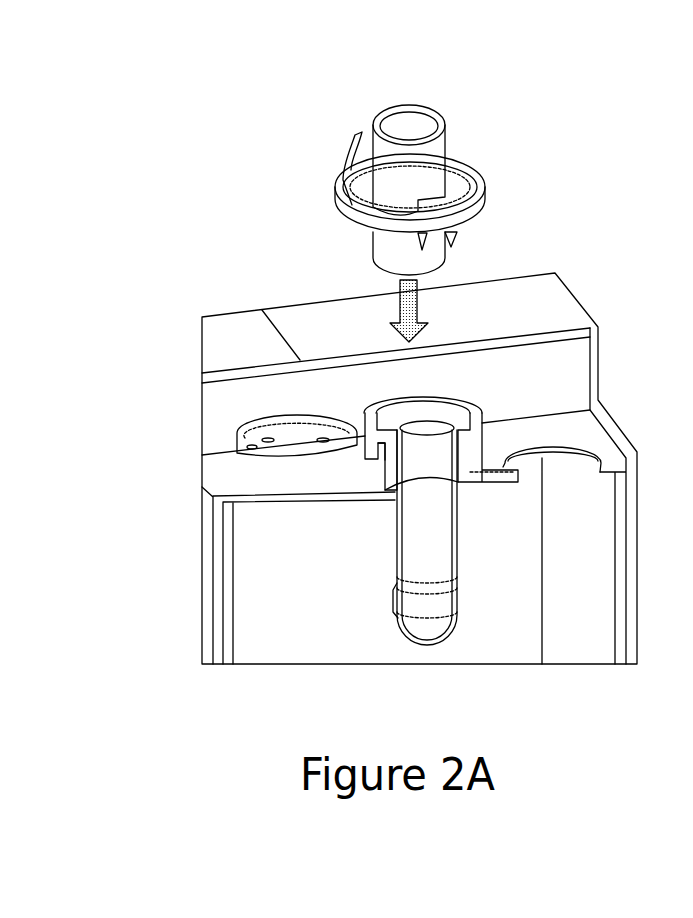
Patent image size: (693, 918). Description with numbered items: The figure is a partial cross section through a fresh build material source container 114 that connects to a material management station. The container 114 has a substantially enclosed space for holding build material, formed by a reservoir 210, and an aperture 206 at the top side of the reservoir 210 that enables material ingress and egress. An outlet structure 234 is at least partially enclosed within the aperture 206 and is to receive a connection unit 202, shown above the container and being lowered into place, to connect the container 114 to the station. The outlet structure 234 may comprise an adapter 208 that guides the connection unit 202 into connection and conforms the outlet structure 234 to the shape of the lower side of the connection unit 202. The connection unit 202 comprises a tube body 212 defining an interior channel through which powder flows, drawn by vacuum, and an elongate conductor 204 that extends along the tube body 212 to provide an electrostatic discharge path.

The fresh build material source container 114 is at (177, 373).
The connection unit 202 is at (455, 161).
The elongate conductor 204 is at (472, 140).
The aperture 206 is at (440, 442).
The adapter 208 is at (370, 408).
The reservoir 210 is at (245, 635).
The tube body 212 is at (382, 172).
The outlet structure 234 is at (350, 462).